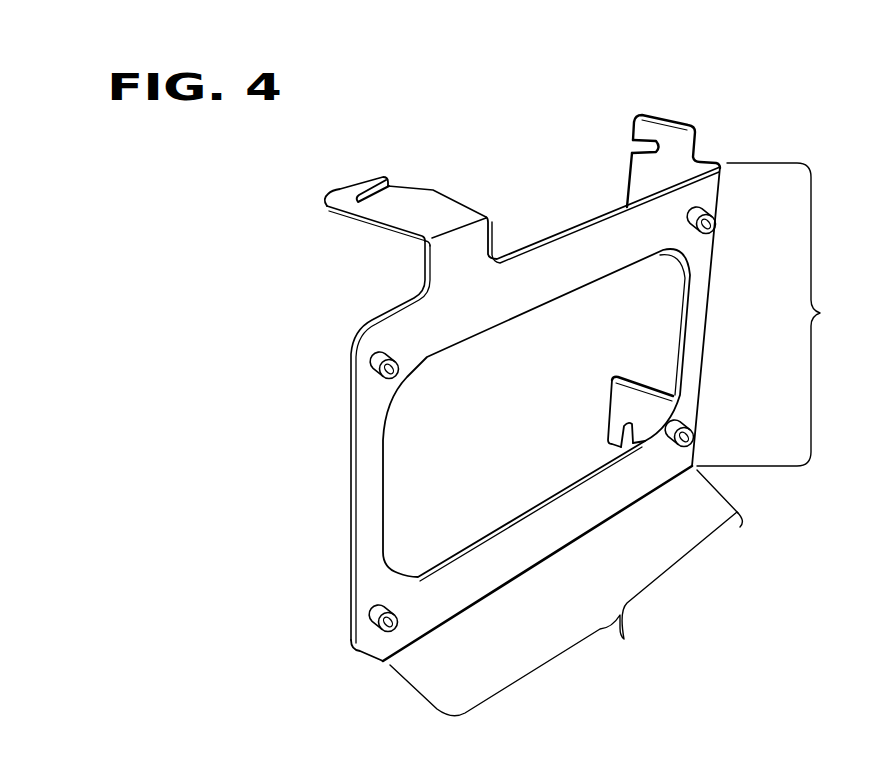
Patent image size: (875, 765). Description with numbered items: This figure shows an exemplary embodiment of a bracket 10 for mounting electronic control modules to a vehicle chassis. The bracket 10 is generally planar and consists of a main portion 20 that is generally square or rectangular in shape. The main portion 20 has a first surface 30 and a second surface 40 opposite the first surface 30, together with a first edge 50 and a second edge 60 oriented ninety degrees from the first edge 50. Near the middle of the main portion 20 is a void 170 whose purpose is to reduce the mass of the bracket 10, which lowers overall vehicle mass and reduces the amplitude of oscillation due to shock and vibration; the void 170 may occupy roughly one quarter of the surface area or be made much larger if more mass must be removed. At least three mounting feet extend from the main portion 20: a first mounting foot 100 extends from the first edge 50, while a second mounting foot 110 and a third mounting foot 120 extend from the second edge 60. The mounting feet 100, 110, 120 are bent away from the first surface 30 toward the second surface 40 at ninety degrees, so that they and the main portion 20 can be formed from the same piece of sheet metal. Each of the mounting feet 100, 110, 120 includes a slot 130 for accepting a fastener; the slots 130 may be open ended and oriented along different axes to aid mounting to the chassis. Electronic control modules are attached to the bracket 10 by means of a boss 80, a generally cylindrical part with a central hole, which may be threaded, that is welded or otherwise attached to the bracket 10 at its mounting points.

The bracket 10 is at (230, 447).
The main portion 20 is at (622, 439).
The first surface 30 is at (368, 567).
The second surface 40 is at (351, 525).
The first edge 50 is at (610, 200).
The second edge 60 is at (708, 280).
The boss 80 is at (707, 213).
The first mounting foot 100 is at (340, 195).
The second mounting foot 110 is at (670, 130).
The third mounting foot 120 is at (633, 397).
The slots 130 is at (395, 187).
The void 170 is at (542, 335).